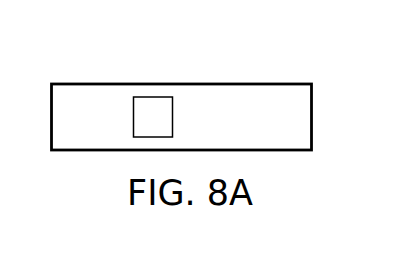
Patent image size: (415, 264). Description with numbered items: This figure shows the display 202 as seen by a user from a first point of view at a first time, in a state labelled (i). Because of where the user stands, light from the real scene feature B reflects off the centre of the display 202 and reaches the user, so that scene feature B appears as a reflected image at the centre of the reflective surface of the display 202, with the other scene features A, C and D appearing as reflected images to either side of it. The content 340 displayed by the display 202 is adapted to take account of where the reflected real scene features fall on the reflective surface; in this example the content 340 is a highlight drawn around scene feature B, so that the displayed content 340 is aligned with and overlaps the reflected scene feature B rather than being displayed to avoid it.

The display 202 is at (300, 84).
The content 340 is at (155, 96).
The state label i is at (25, 138).